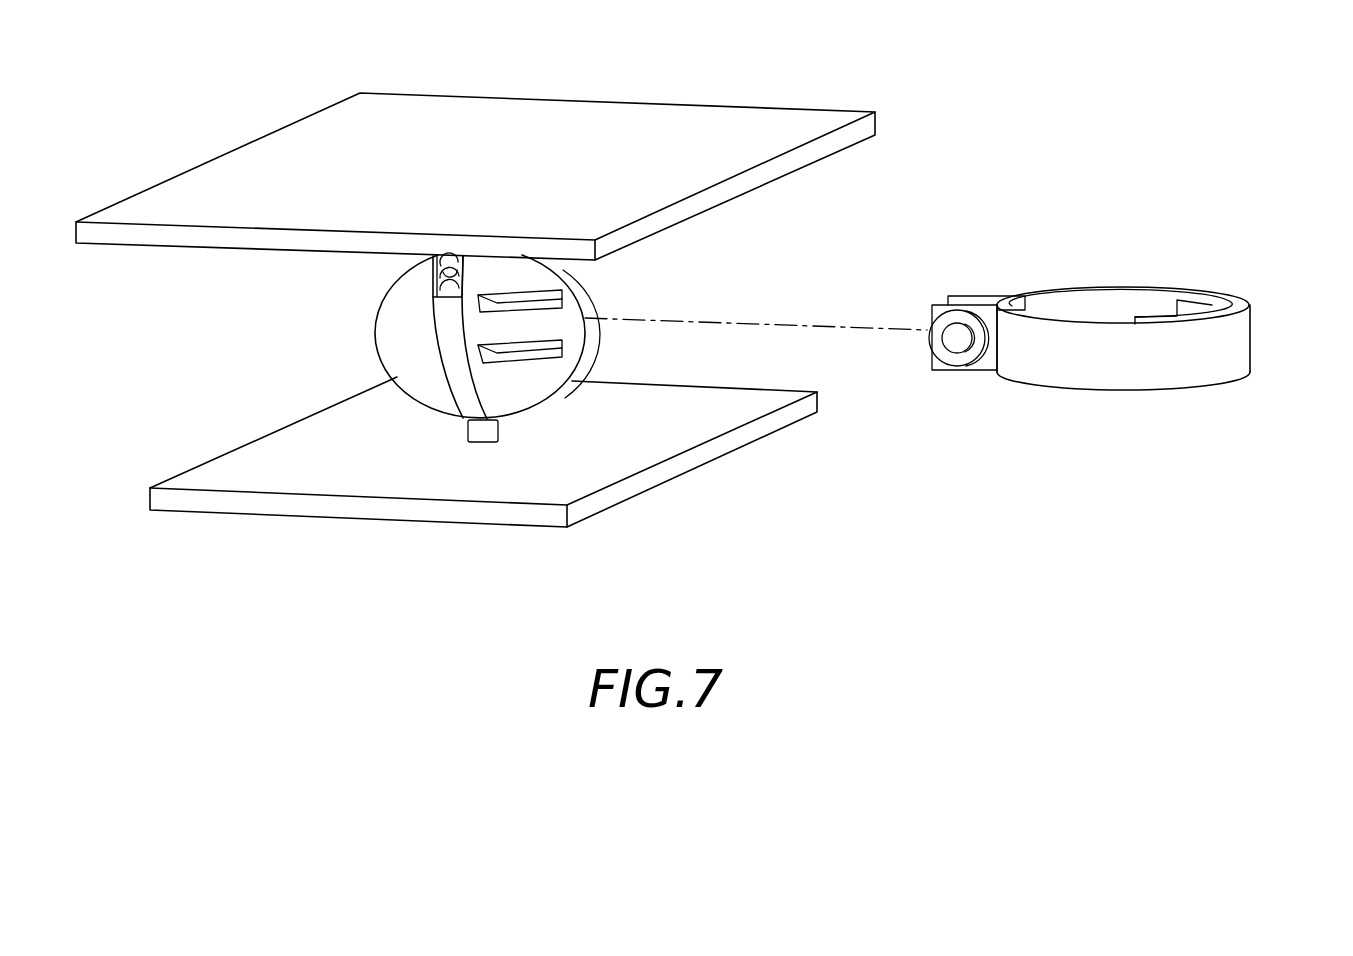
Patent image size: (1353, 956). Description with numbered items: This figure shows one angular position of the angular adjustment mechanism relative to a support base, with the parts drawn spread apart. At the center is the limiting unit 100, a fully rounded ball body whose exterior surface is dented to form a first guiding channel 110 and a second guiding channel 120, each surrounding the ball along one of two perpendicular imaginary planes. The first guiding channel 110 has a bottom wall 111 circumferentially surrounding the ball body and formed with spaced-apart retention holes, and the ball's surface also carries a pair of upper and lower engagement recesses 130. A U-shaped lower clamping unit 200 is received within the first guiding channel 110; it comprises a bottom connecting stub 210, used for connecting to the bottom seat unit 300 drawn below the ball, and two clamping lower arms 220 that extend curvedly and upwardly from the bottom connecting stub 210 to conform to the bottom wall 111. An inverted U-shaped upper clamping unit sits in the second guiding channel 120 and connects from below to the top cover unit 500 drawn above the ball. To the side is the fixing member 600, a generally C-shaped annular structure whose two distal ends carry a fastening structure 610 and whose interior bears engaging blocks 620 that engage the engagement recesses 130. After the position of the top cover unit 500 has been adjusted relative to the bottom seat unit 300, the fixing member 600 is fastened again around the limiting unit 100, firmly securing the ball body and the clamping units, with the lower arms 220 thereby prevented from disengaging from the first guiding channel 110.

The limiting unit 100 is at (354, 342).
The first guiding channel 110 is at (437, 274).
The bottom wall 111 is at (460, 262).
The second guiding channel 120 is at (584, 357).
The engagement recesses 130 is at (584, 296).
The lower clamping unit 200 is at (431, 449).
The bottom connecting stub 210 is at (487, 430).
The clamping lower arms 220 is at (440, 374).
The bottom seat unit 300 is at (256, 508).
The top cover unit 500 is at (736, 122).
The fixing member 600 is at (1141, 324).
The fastening structure 610 is at (958, 366).
The engaging blocks 620 is at (1211, 305).